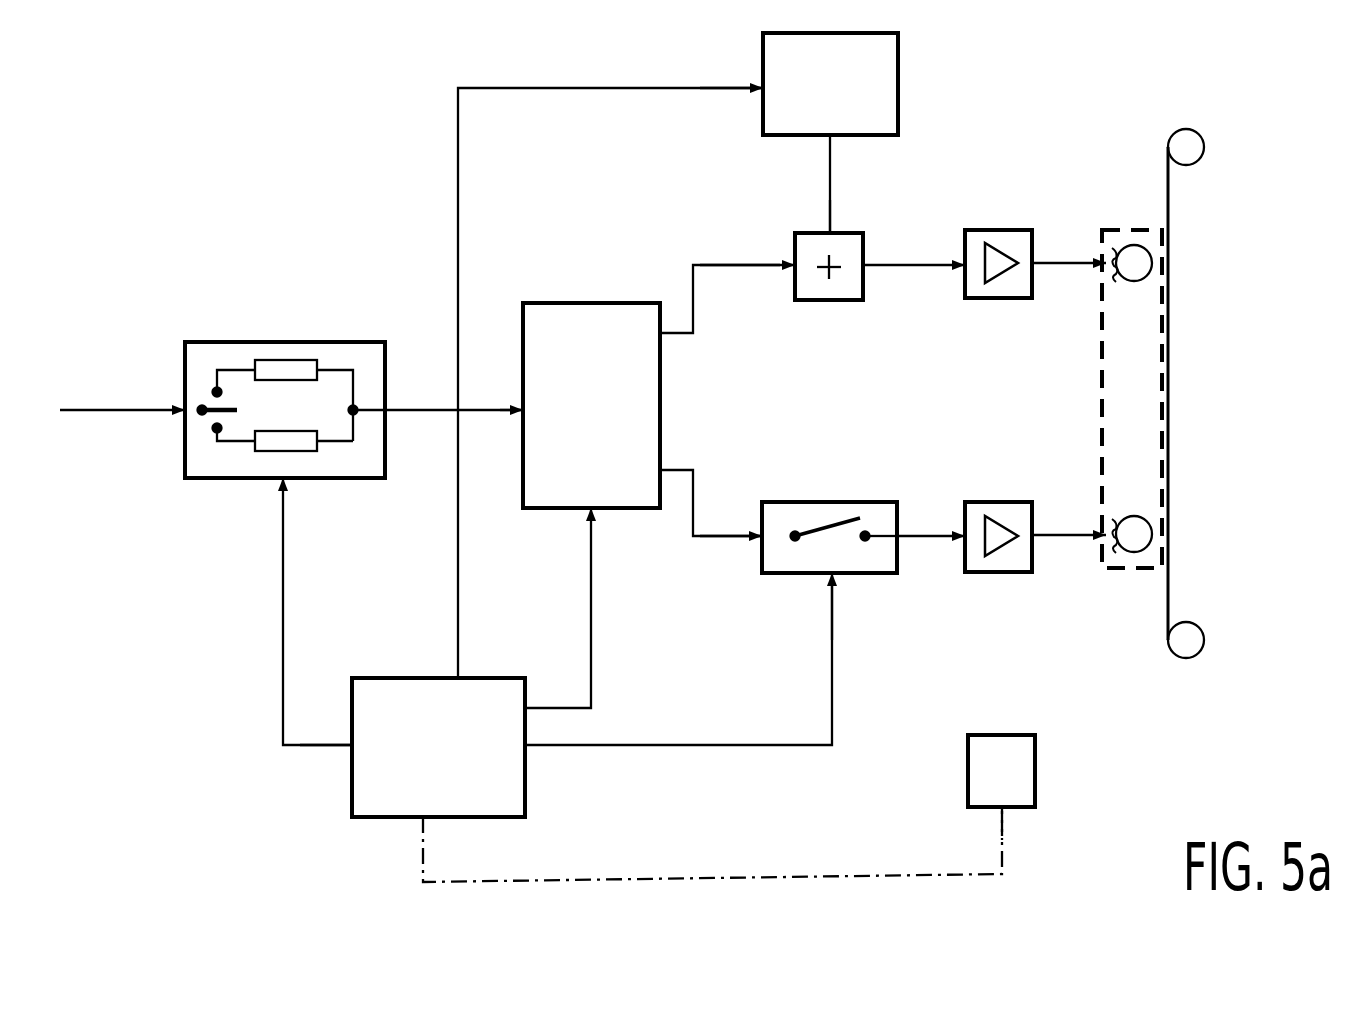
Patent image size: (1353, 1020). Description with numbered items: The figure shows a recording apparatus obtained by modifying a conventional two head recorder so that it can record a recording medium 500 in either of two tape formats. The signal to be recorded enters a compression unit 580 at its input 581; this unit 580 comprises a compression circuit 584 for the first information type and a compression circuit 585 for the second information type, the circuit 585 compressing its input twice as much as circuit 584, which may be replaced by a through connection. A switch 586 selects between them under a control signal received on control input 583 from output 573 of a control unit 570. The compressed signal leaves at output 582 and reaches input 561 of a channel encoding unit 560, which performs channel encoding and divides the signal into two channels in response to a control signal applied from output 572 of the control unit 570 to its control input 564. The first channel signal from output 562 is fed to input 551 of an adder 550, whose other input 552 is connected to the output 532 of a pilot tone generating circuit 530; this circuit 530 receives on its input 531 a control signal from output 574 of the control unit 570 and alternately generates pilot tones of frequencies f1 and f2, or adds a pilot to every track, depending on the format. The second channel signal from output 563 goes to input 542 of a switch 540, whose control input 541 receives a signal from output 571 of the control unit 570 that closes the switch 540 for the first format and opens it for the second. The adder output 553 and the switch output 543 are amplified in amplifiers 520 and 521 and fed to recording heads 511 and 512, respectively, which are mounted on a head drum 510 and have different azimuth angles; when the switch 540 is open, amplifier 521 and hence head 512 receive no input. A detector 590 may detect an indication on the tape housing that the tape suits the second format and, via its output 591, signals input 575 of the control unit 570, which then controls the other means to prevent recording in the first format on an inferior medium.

The recording medium 500 is at (1170, 209).
The head drum 510 is at (1103, 400).
The recording head 511 is at (1131, 240).
The recording head 512 is at (1139, 572).
The amplifier 520 is at (993, 236).
The amplifier 521 is at (1008, 508).
The pilot tone generating circuit 530 is at (884, 49).
The input of pilot tone generating circuit 531 is at (760, 82).
The output of pilot tone generating circuit 532 is at (833, 140).
The switch 540 is at (848, 501).
The control input of switch 541 is at (836, 582).
The input of switch 542 is at (759, 552).
The output of switch 543 is at (902, 540).
The adder 550 is at (853, 247).
The input of adder 551 is at (792, 262).
The other input of adder 552 is at (824, 229).
The output of adder 553 is at (868, 271).
The channel encoding unit 560 is at (610, 316).
The input of channel encoding unit 561 is at (519, 402).
The first output of channel encoding unit 562 is at (662, 344).
The second output of channel encoding unit 563 is at (663, 466).
The control input of channel encoding unit 564 is at (596, 516).
The control unit 570 is at (463, 797).
The output of control unit 571 is at (530, 750).
The output of control unit 572 is at (527, 704).
The output of control unit 573 is at (348, 750).
The output of control unit 574 is at (460, 674).
The input of control unit 575 is at (419, 826).
The compression unit 580 is at (353, 340).
The input of compression unit 581 is at (182, 409).
The output of compression unit 582 is at (388, 404).
The control input of compression unit 583 is at (291, 484).
The compression circuit 584 is at (277, 366).
The compression circuit 585 is at (270, 444).
The switch 586 is at (209, 422).
The detector 590 is at (1025, 767).
The output of detector 591 is at (1005, 812).